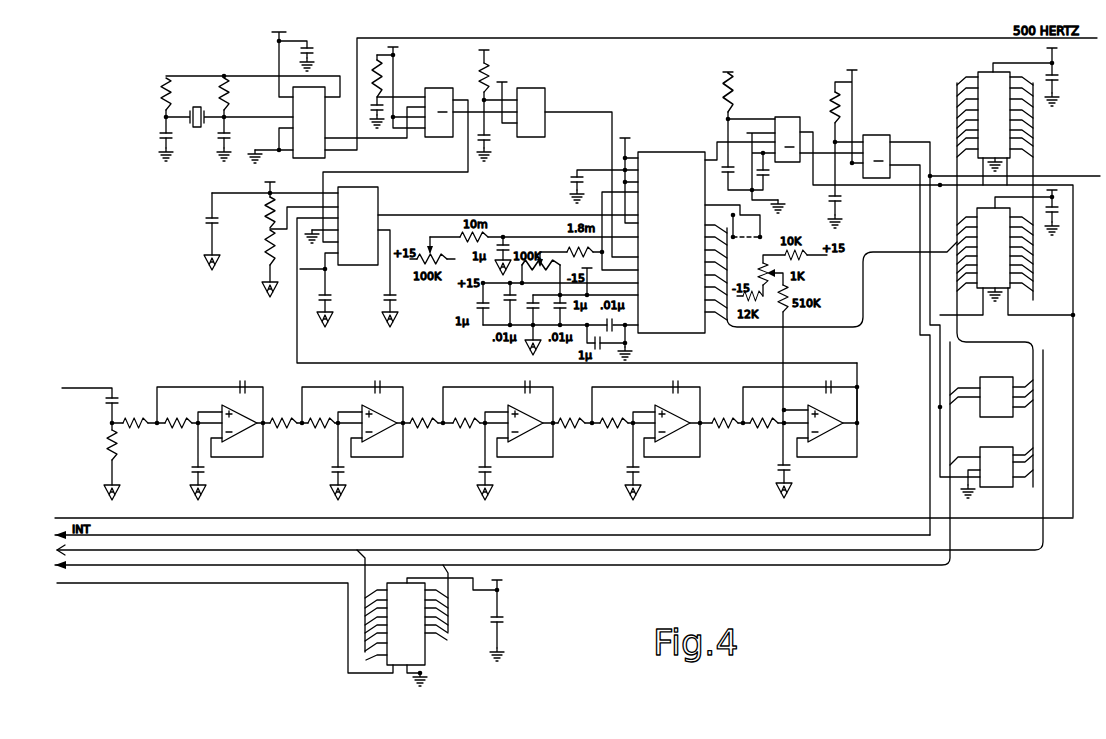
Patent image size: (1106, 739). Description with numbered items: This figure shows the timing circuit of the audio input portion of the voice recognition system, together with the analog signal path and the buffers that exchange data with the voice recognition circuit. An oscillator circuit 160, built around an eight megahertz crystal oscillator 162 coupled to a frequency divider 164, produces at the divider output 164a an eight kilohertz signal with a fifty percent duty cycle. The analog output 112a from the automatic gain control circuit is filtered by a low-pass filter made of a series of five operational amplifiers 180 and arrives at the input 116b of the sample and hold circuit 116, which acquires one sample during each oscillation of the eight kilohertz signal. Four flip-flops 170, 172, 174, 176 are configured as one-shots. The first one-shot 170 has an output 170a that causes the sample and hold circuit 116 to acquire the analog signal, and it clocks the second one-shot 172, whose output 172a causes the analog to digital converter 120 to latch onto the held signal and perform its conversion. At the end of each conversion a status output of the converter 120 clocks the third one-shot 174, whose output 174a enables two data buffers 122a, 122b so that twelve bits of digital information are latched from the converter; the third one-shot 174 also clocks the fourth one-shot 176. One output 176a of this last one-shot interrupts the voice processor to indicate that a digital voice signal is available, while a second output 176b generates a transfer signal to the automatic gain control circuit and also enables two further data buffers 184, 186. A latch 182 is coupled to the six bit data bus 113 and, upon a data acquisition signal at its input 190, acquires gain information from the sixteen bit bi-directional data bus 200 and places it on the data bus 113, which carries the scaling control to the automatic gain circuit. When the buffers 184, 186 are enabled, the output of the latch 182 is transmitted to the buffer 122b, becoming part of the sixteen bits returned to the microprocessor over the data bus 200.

The oscillator circuit 160 is at (207, 62).
The crystal oscillator 162 is at (198, 103).
The frequency divider 164 is at (291, 153).
The output from the frequency divider 164a is at (401, 140).
The first one-shot 170 is at (430, 88).
The output of the first one-shot 170a is at (468, 172).
The second one-shot 172 is at (522, 88).
The output of the second one-shot 172a is at (577, 113).
The third one-shot 174 is at (778, 117).
The output of the third one-shot 174a is at (868, 186).
The fourth one-shot 176 is at (870, 135).
The output of the fourth one-shot 176a is at (903, 164).
The second output of the fourth one-shot 176b is at (1088, 178).
The data buffer 122a is at (980, 82).
The data buffer 122b is at (1011, 286).
The data buffer 184 is at (998, 390).
The data buffer 186 is at (995, 487).
The analog to digital converter 120 is at (672, 333).
The sample and hold circuit 116 is at (347, 267).
The input of the sample and hold circuit 116b is at (297, 348).
The output from the automatic gain control circuit 112a is at (93, 388).
The operational amplifiers 180 is at (233, 436).
The latch 182 is at (413, 650).
The input 190 is at (173, 583).
The data bus 113 is at (630, 568).
The data bus 200 is at (990, 551).